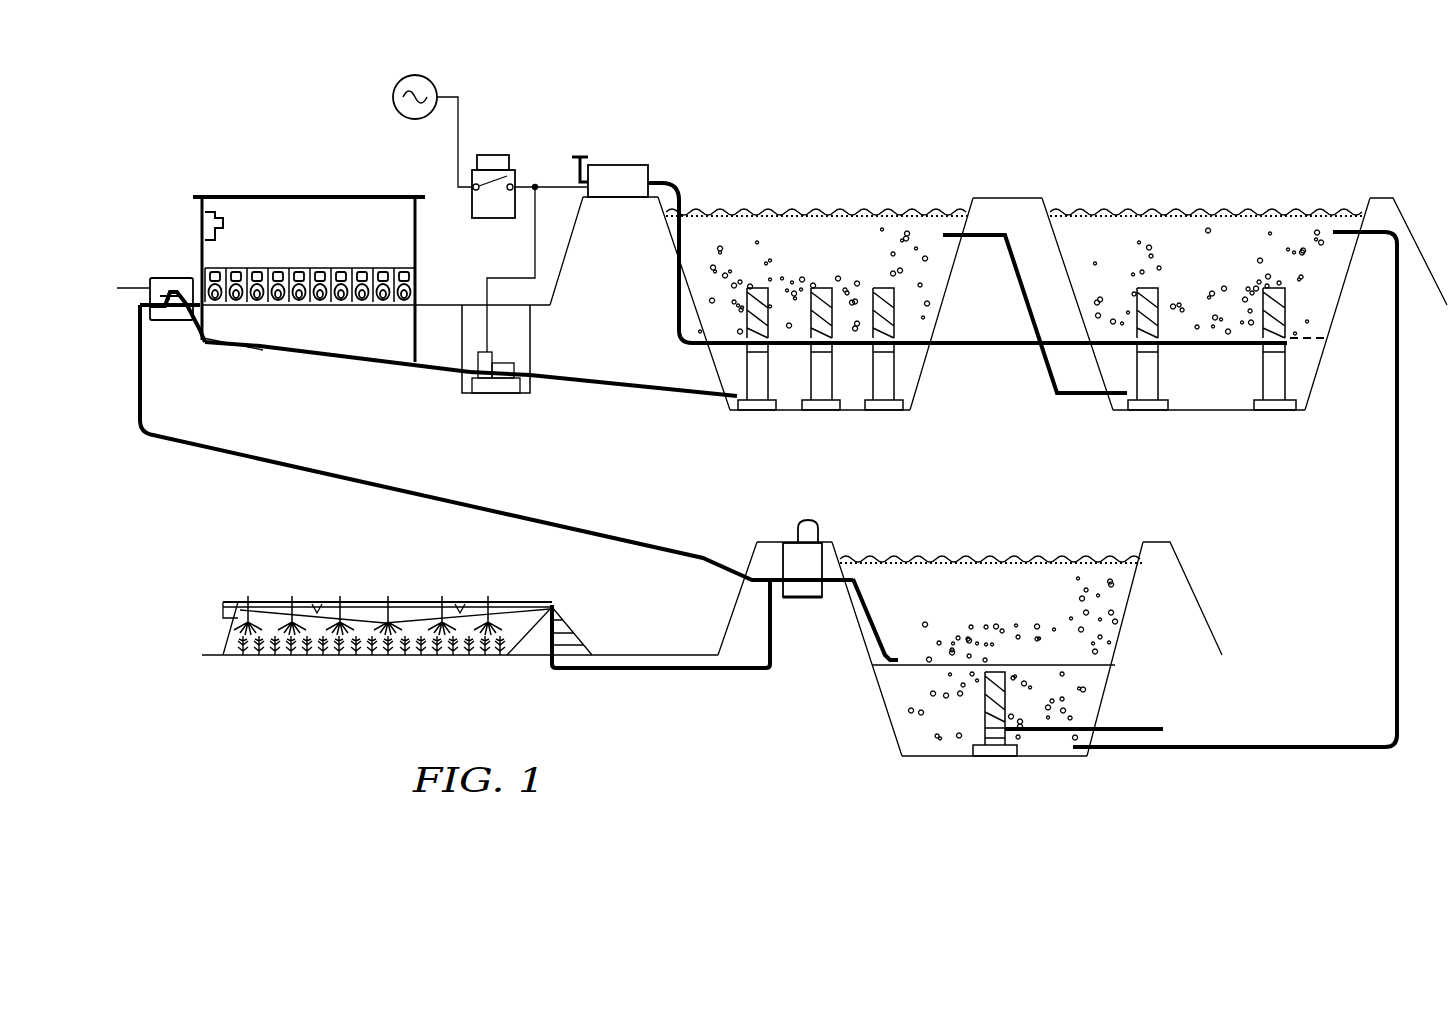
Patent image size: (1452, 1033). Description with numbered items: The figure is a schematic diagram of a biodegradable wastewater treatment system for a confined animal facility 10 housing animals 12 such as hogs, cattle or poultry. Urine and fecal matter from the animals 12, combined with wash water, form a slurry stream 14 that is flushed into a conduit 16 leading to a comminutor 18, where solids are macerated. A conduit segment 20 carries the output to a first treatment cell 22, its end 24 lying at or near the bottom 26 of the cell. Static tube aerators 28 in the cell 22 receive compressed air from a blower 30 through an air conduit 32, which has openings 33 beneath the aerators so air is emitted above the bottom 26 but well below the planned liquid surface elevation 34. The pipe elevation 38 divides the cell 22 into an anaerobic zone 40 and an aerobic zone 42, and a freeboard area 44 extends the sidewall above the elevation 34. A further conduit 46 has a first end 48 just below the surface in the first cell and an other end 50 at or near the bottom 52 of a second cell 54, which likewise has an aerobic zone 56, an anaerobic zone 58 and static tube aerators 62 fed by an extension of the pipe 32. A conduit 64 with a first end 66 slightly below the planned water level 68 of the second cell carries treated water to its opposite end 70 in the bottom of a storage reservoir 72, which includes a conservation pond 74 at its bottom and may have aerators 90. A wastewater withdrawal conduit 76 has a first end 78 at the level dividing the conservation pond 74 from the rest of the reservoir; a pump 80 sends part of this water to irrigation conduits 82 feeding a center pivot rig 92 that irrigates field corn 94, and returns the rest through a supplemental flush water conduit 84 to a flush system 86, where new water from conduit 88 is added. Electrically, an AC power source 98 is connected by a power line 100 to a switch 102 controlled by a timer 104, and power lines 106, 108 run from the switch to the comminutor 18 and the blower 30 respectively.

The confined animal facility 10 is at (303, 164).
The animals 12 is at (257, 269).
The slurry stream 14 is at (232, 346).
The conduit 16 is at (447, 362).
The comminutor 18 is at (503, 363).
The conduit segment 20 is at (630, 388).
The first treatment cell 22 is at (850, 140).
The end of conduit 24 is at (736, 402).
The bottom of first cell 26 is at (857, 414).
The static tube aerators 28 is at (757, 287).
The blower 30 is at (616, 165).
The air conduit 32 is at (668, 300).
The openings 33 is at (745, 350).
The planned liquid surface elevation 34 is at (966, 212).
The pipe elevation 38 is at (990, 348).
The anaerobic zone 40 is at (908, 383).
The aerobic zone 42 is at (716, 225).
The freeboard area 44 is at (668, 231).
The further conduit 46 is at (993, 233).
The first end of conduit 48 is at (950, 240).
The other end of conduit 50 is at (1130, 402).
The bottom of second cell 52 is at (1272, 414).
The second cell 54 is at (1227, 140).
The aerobic zone of second cell 56 is at (1100, 243).
The anaerobic zone of second cell 58 is at (1302, 392).
The static tube aerators 62 is at (1148, 287).
The conduit 64 is at (1400, 522).
The first end of conduit 66 is at (1345, 232).
The planned water elevational level 68 is at (1046, 206).
The opposite end of conduit 70 is at (900, 748).
The storage reservoir 72 is at (1013, 530).
The conservation pond 74 is at (1095, 688).
The wastewater withdrawal conduit 76 is at (868, 590).
The first end of withdrawal conduit 78 is at (905, 667).
The pump 80 is at (790, 548).
The irrigation conduits 82 is at (778, 660).
The supplemental flush water conduit 84 is at (336, 470).
The flush system 86 is at (172, 280).
The new water conduit 88 is at (135, 287).
The aerators 90 is at (985, 690).
The center pivot rig 92 is at (390, 600).
The field corn 94 is at (505, 668).
The AC power source 98 is at (415, 75).
The power line 100 is at (456, 135).
The switch 102 is at (488, 222).
The timer 104 is at (492, 154).
The power line 106 is at (485, 291).
The power line 108 is at (548, 185).